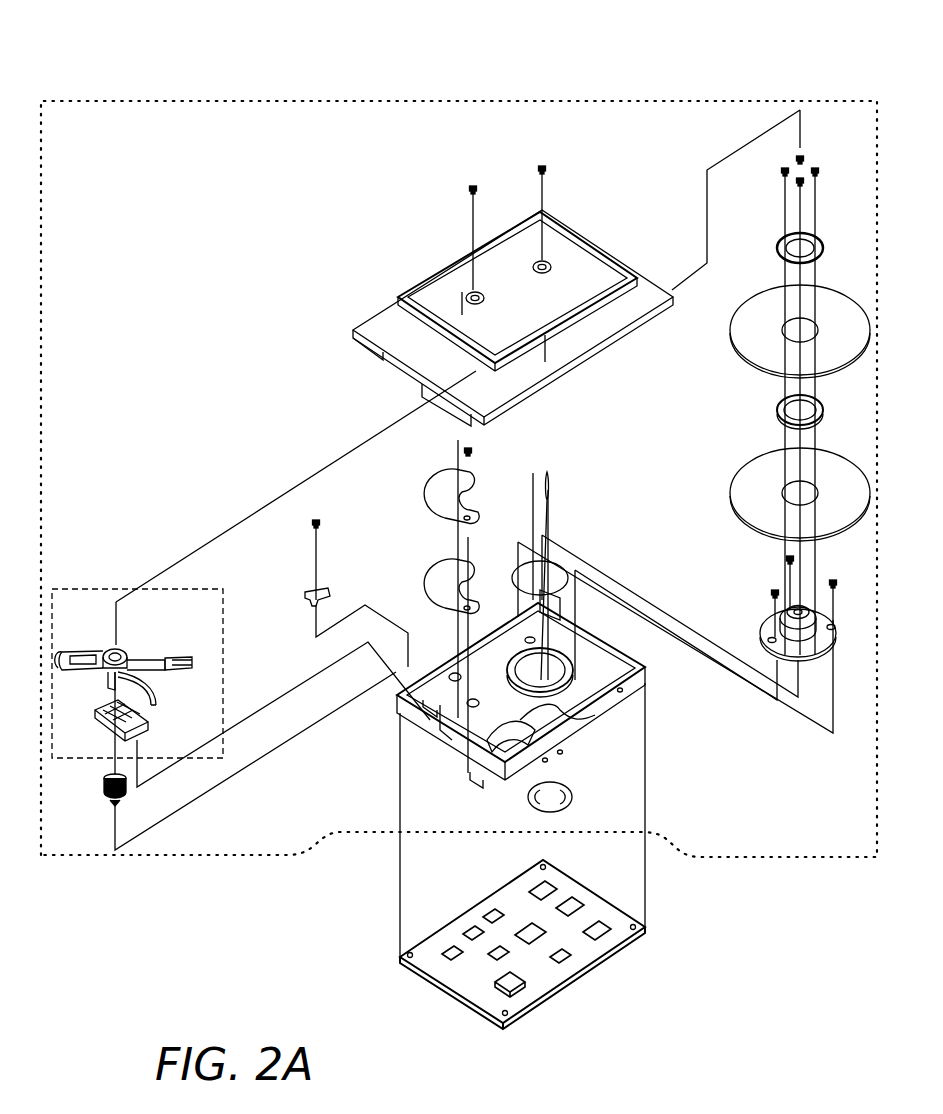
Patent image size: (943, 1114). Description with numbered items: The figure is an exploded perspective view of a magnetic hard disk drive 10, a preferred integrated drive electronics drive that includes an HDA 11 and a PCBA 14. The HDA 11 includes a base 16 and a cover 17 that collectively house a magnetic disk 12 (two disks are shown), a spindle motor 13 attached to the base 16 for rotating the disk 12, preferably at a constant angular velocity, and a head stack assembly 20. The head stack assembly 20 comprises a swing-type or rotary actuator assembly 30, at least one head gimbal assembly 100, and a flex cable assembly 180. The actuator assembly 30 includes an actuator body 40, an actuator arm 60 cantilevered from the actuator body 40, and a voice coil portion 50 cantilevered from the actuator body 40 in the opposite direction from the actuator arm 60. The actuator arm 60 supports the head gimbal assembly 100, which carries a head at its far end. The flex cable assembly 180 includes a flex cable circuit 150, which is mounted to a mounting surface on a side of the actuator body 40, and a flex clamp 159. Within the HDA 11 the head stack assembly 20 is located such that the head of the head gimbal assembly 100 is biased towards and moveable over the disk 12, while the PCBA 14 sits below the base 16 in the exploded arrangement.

The magnetic hard disk drive 10 is at (278, 73).
The HDA 11 is at (725, 857).
The magnetic disk 12 is at (737, 378).
The spindle motor 13 is at (763, 625).
The PCBA 14 is at (568, 982).
The base 16 is at (630, 702).
The cover 17 is at (424, 276).
The head stack assembly 20 is at (88, 588).
The actuator assembly 30 is at (70, 645).
The actuator body 40 is at (120, 650).
The voice coil portion 50 is at (85, 678).
The actuator arm 60 is at (158, 672).
The head gimbal assembly 100 is at (178, 658).
The flex cable circuit 150 is at (160, 705).
The flex clamp 159 is at (103, 723).
The flex cable assembly 180 is at (165, 727).